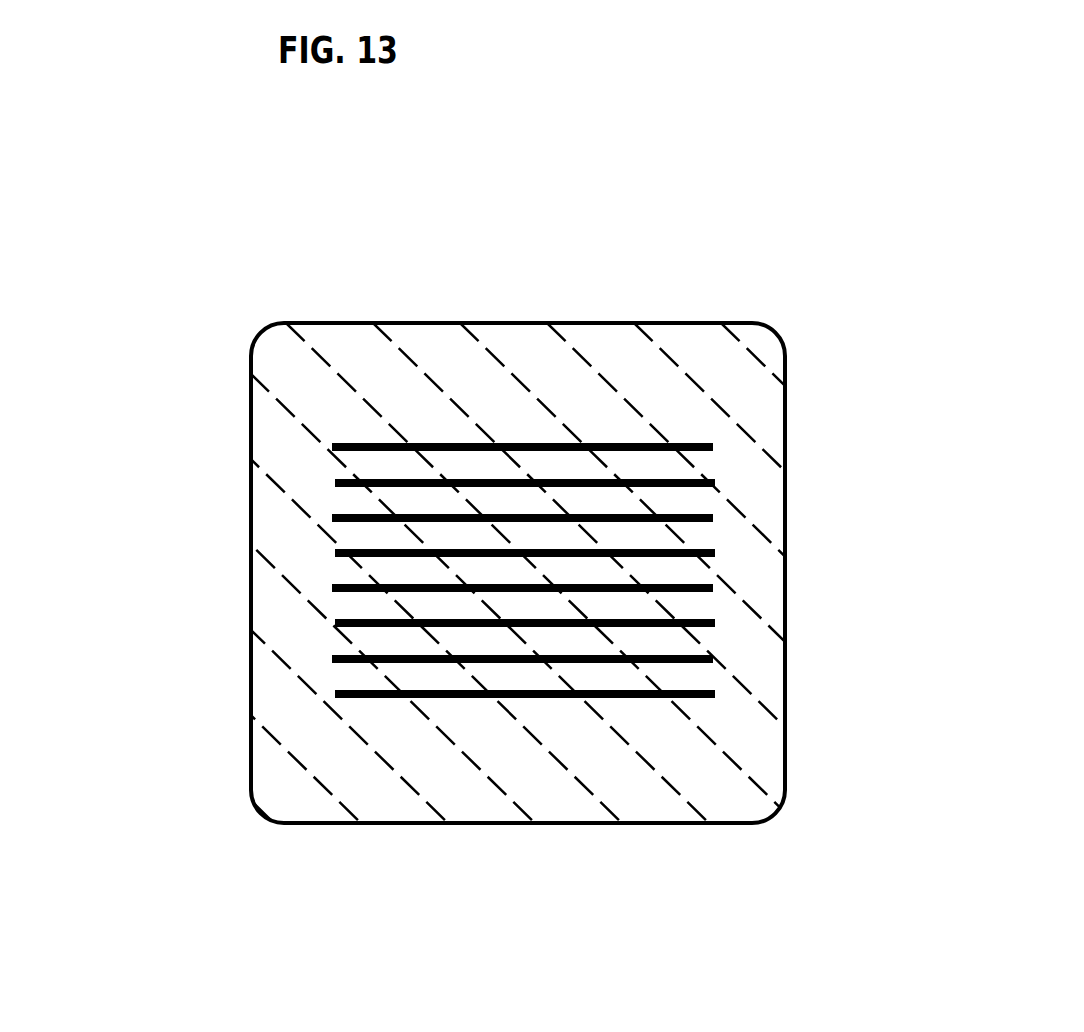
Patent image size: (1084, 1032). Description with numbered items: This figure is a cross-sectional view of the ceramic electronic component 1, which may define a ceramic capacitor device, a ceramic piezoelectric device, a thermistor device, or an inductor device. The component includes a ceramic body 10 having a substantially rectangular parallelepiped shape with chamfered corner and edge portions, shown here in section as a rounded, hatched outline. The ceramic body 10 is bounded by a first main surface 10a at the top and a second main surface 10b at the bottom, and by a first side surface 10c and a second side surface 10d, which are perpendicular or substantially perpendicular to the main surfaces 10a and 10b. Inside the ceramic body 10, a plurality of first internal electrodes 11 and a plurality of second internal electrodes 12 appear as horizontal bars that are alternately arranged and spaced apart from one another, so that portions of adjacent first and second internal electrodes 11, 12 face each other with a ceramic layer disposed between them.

The ceramic electronic component 1 is at (629, 252).
The ceramic body 10 is at (542, 278).
The first main surface 10a is at (457, 325).
The second main surface 10b is at (398, 825).
The first side surface 10c is at (250, 583).
The second side surface 10d is at (786, 590).
The first internal electrode 11 is at (350, 513).
The second internal electrode 12 is at (685, 477).